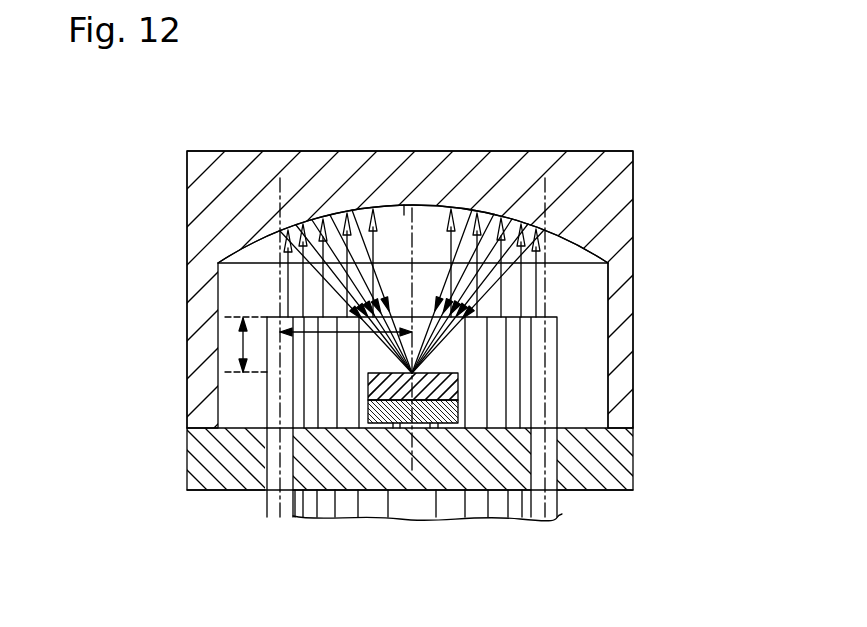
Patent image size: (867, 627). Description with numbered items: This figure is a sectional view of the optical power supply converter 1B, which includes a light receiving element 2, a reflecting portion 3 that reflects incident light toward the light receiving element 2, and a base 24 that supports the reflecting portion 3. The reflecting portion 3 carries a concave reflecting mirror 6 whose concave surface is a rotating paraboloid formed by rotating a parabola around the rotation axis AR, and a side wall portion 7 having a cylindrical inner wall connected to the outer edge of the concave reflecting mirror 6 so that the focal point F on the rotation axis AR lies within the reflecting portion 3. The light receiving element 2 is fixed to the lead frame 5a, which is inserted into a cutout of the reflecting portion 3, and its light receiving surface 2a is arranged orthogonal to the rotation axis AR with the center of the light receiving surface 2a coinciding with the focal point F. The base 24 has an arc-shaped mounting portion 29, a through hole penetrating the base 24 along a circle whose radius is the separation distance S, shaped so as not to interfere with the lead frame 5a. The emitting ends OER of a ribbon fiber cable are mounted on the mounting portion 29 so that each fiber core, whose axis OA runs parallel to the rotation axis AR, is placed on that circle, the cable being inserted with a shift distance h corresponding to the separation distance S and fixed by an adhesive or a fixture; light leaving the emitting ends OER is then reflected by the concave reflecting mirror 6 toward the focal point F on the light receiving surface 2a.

The optical power supply converter 1B is at (164, 163).
The reflecting portion 3 is at (243, 150).
The concave reflecting mirror 6 is at (590, 247).
The side wall portion 7 is at (633, 300).
The rotation axis AR is at (404, 205).
The optical axis OA is at (280, 327).
The emitting ends OER is at (268, 385).
The focal point F is at (412, 291).
The light receiving surface 2a is at (432, 372).
The light receiving element 2 is at (367, 385).
The lead frame 5a is at (400, 430).
The base 24 is at (187, 470).
The mounting portion 29 is at (283, 489).
The shift distance h is at (242, 345).
The separation distance S is at (346, 335).